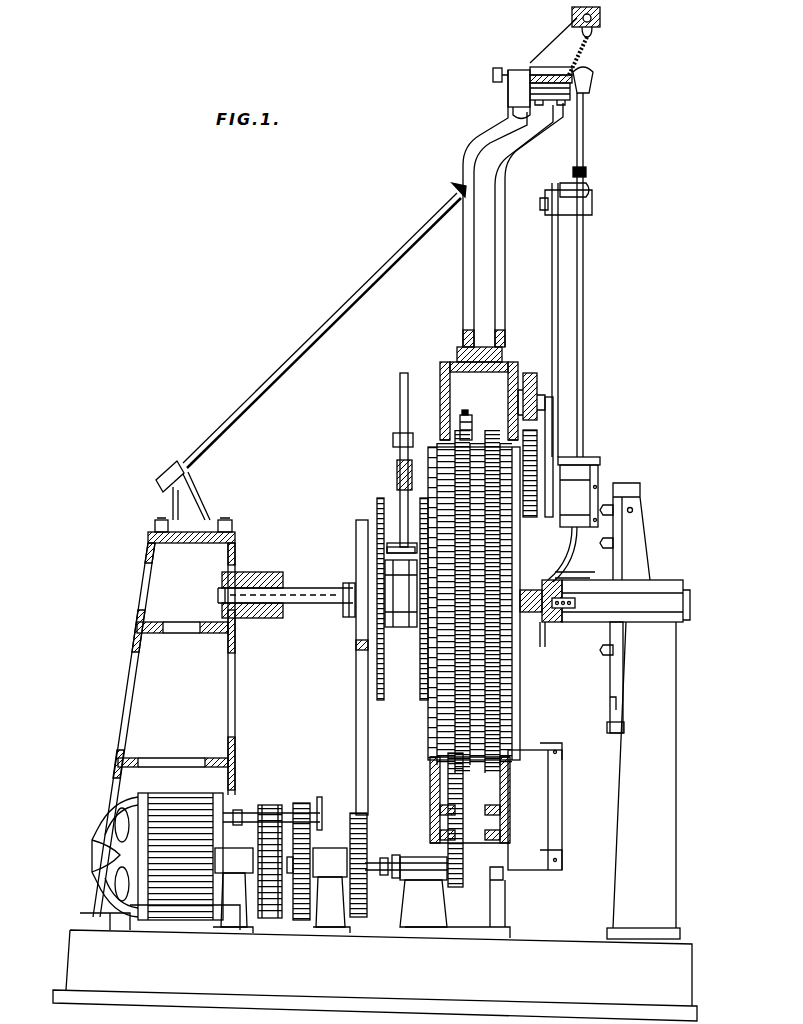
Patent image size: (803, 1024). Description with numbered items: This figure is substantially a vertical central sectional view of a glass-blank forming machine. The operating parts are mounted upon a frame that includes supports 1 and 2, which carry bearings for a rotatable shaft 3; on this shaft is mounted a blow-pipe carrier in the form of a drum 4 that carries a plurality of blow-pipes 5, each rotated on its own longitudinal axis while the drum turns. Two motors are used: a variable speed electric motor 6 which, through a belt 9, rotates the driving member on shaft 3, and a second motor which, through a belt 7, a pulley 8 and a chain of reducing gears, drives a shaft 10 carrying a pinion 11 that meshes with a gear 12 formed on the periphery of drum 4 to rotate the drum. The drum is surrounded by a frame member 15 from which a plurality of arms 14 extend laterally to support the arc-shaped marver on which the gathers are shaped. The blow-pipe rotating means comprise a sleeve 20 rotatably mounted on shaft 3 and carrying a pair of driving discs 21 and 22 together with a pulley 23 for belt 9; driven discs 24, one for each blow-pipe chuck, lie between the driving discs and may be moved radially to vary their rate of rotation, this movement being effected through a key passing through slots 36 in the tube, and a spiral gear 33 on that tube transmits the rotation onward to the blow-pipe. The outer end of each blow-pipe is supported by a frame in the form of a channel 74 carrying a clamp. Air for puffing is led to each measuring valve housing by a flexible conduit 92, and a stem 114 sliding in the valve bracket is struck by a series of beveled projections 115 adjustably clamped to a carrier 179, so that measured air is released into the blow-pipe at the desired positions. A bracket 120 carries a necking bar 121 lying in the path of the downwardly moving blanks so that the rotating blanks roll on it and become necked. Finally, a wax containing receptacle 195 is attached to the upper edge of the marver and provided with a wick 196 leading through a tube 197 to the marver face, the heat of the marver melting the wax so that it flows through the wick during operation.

The support 1 is at (137, 583).
The support 2 is at (677, 687).
The shaft 3 is at (305, 590).
The drum 4 is at (520, 665).
The blow-pipe 5 is at (582, 345).
The variable speed electric motor 6 is at (153, 837).
The belt 7 is at (272, 803).
The pulley 8 is at (248, 798).
The belt 9 is at (353, 702).
The shaft 10 is at (385, 855).
The pinion 11 is at (458, 890).
The gear 12 is at (463, 412).
The arm 14 is at (462, 272).
The frame member 15 is at (440, 372).
The sleeve 20 is at (404, 628).
The driving disc 21 is at (357, 665).
The driving disc 22 is at (410, 697).
The pulley 23 is at (347, 628).
The driven disc 24 is at (395, 540).
The spiral gear 33 is at (396, 462).
The slot 36 is at (397, 398).
The channel 74 is at (557, 292).
The flexible conduit 92 is at (558, 568).
The stem 114 is at (600, 468).
The beveled projection 115 is at (603, 502).
The bracket 120 is at (645, 552).
The necking bar 121 is at (565, 797).
The carrier 179 is at (612, 657).
The wax containing receptacle 195 is at (600, 16).
The wick 196 is at (572, 17).
The tube 197 is at (592, 33).